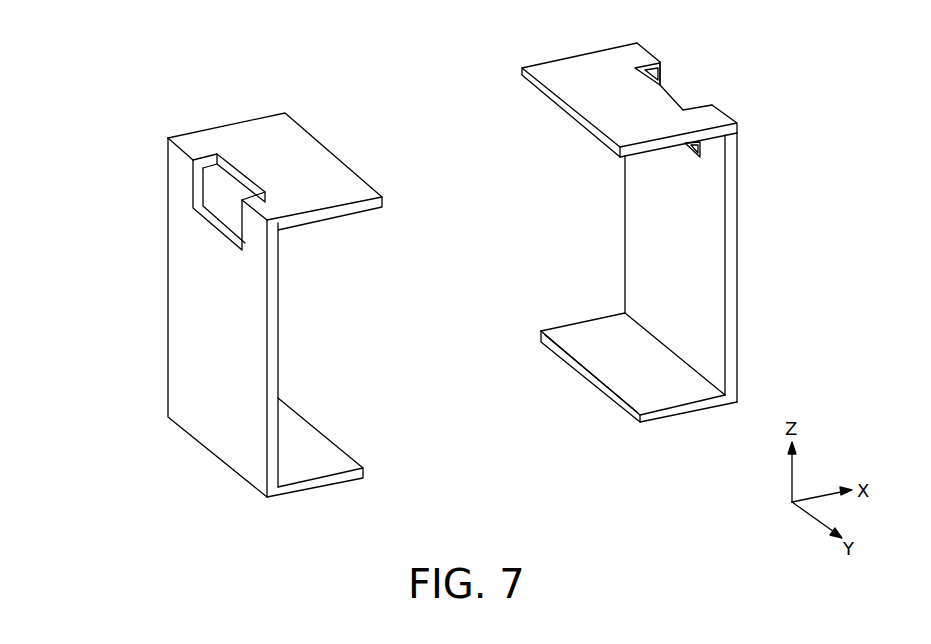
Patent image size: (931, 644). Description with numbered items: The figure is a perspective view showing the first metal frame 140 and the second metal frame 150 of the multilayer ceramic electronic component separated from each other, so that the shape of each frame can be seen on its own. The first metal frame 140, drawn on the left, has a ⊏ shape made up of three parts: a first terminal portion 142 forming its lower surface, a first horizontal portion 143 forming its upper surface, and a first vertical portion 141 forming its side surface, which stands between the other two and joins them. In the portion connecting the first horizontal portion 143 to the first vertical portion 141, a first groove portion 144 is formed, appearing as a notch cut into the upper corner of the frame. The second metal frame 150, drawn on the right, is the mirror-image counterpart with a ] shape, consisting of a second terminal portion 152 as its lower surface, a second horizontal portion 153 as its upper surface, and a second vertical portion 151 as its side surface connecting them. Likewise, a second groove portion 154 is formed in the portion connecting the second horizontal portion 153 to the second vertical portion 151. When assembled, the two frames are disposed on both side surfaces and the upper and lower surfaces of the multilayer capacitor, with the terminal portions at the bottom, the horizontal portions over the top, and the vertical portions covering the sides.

The first metal frame 140 is at (162, 270).
The first vertical portion 141 is at (193, 375).
The first terminal portion 142 is at (310, 483).
The first horizontal portion 143 is at (247, 135).
The first groove portion 144 is at (197, 189).
The second metal frame 150 is at (740, 332).
The second vertical portion 151 is at (737, 288).
The second terminal portion 152 is at (657, 413).
The second horizontal portion 153 is at (602, 63).
The second groove portion 154 is at (675, 93).